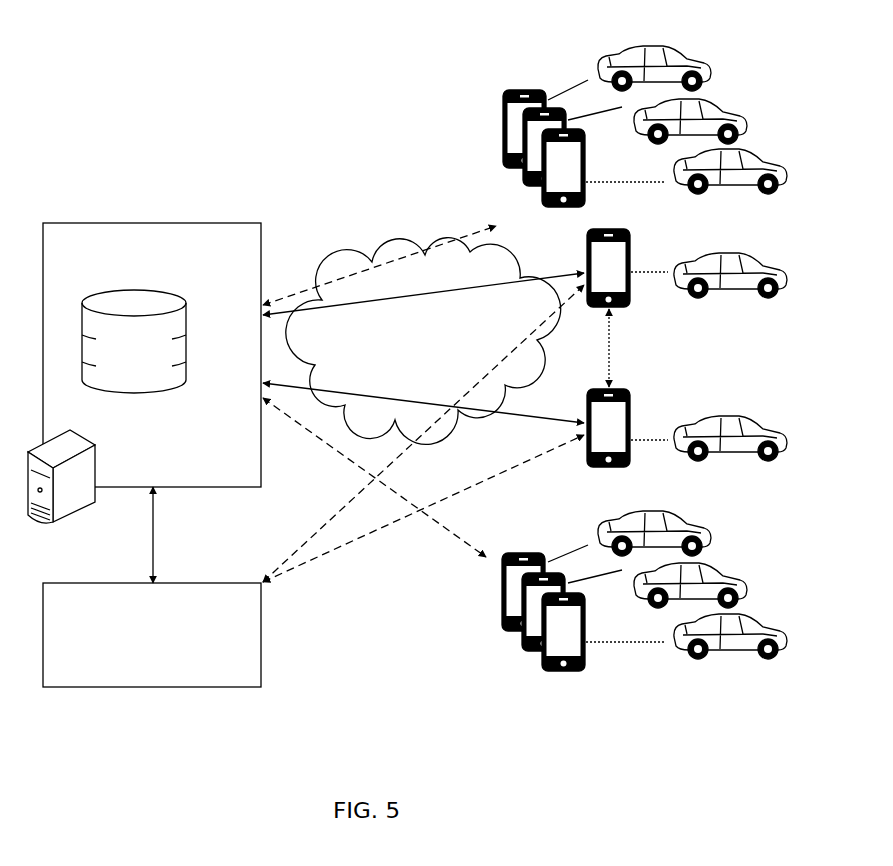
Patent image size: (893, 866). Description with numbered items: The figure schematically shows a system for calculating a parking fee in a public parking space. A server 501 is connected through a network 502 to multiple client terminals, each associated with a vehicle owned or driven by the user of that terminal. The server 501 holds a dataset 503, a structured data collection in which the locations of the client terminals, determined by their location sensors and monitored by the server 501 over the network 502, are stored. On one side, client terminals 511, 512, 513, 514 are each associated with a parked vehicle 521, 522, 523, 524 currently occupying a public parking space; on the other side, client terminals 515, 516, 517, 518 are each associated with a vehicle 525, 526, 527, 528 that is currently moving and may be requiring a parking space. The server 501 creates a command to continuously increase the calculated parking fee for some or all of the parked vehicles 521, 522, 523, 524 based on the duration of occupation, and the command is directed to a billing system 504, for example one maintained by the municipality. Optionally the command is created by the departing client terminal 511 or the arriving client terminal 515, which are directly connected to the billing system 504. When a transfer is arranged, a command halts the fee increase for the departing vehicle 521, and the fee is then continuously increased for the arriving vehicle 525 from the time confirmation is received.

The server 501 is at (144, 373).
The network 502 is at (423, 341).
The dataset 503 is at (134, 341).
The billing system 504 is at (152, 587).
The departing client terminal 511 is at (626, 266).
The client terminal 512 is at (505, 129).
The client terminal 513 is at (524, 150).
The client terminal 514 is at (547, 173).
The arriving client terminal 515 is at (626, 427).
The client terminal 516 is at (506, 592).
The client terminal 517 is at (526, 615).
The client terminal 518 is at (548, 637).
The departing vehicle 521 is at (730, 270).
The parked vehicle 522 is at (654, 65).
The parked vehicle 523 is at (705, 116).
The parked vehicle 524 is at (730, 166).
The arriving vehicle 525 is at (730, 424).
The vehicle 526 is at (654, 529).
The vehicle 527 is at (690, 581).
The vehicle 528 is at (730, 631).